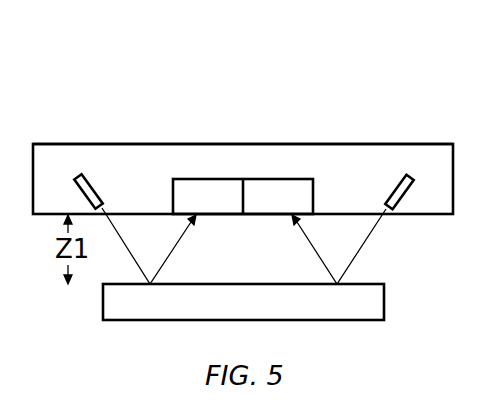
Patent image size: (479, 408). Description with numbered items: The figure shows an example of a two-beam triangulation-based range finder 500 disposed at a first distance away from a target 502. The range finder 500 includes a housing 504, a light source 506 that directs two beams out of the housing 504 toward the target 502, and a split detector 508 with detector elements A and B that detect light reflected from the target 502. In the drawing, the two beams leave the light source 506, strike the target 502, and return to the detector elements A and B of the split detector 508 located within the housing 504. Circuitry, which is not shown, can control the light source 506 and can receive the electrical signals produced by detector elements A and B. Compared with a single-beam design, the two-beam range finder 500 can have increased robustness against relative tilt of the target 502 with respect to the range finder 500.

The two-beam triangulation-based range finder 500 is at (117, 120).
The target 502 is at (384, 302).
The housing 504 is at (245, 143).
The light source 506 is at (128, 189).
The split detector 508 is at (228, 179).